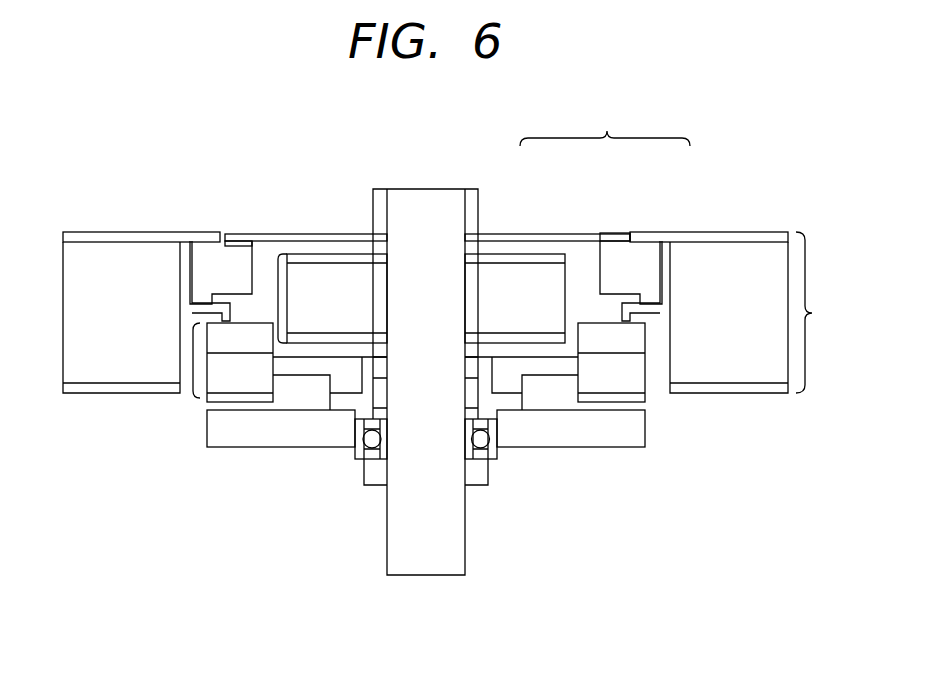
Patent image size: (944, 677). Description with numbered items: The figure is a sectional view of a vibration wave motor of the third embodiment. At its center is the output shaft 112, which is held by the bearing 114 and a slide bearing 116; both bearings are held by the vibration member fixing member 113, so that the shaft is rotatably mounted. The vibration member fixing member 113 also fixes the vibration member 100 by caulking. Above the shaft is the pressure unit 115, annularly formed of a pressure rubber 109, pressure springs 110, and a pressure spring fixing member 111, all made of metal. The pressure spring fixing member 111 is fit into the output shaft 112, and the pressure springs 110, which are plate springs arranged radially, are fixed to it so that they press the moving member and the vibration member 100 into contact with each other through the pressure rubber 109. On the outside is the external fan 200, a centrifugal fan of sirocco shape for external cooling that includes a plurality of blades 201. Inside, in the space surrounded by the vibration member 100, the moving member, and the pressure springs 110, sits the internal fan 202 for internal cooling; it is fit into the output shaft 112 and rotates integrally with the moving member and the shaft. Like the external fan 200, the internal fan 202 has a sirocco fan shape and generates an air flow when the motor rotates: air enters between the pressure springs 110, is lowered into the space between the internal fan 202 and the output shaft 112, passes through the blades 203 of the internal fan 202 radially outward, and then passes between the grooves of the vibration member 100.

The vibration member 100 is at (190, 358).
The pressure rubber 109 is at (613, 237).
The pressure springs 110 is at (563, 236).
The pressure spring fixing member 111 is at (472, 213).
The output shaft 112 is at (435, 553).
The vibration member fixing member 113 is at (315, 437).
The bearing 114 is at (490, 457).
The pressure unit 115 is at (605, 123).
The slide bearing 116 is at (473, 370).
The external fan 200 is at (825, 312).
The blades 201 is at (737, 367).
The internal fan 202 is at (278, 293).
The blades 203 is at (319, 278).